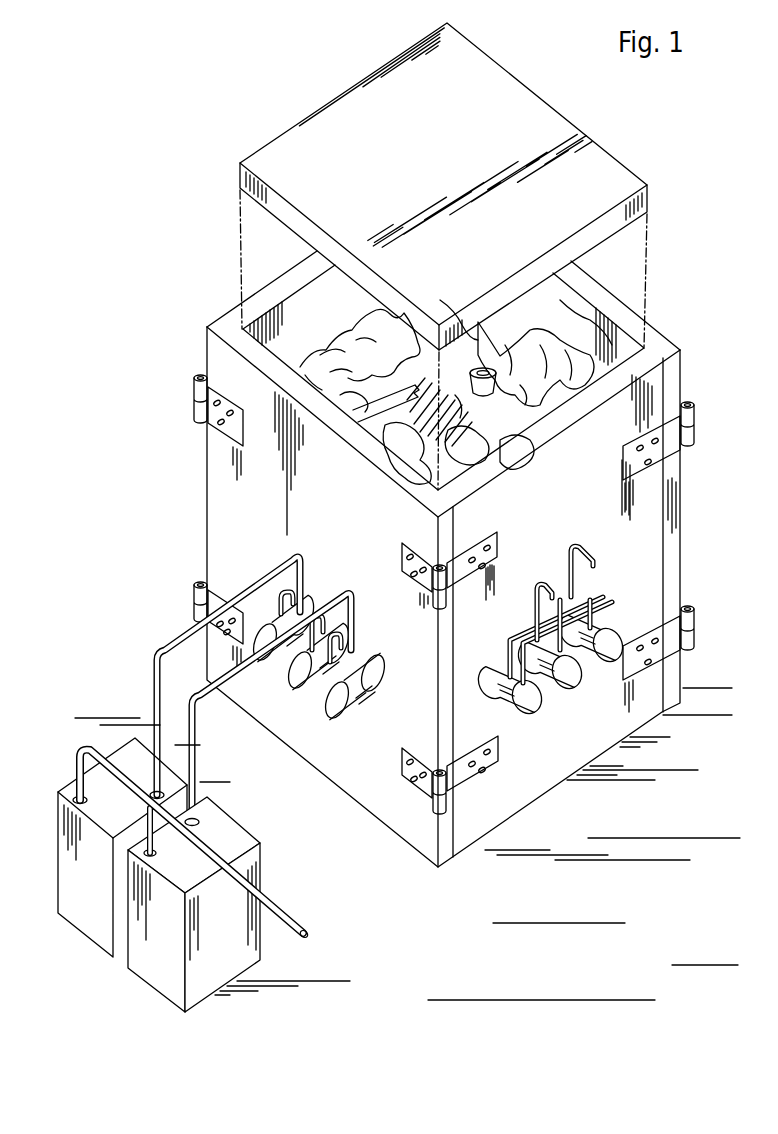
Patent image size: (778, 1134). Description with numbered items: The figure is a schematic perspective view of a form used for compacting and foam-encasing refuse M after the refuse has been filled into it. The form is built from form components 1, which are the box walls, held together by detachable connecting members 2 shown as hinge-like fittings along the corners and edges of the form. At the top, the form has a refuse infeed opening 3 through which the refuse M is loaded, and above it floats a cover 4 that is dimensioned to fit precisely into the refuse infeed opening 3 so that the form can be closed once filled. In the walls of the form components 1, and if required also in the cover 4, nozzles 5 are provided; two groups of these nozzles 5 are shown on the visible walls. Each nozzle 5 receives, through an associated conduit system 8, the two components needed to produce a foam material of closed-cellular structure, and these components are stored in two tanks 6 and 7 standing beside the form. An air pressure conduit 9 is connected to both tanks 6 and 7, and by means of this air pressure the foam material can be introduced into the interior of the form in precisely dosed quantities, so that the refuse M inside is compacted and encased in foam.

The form components 1 is at (537, 787).
The detachable connecting members 2 is at (672, 413).
The refuse infeed opening 3 is at (624, 330).
The cover 4 is at (620, 178).
The nozzles 5 is at (615, 637).
The tank 6 is at (163, 790).
The tank 7 is at (200, 820).
The conduit system 8 is at (312, 592).
The air pressure conduit 9 is at (273, 903).
The refuse M is at (512, 330).